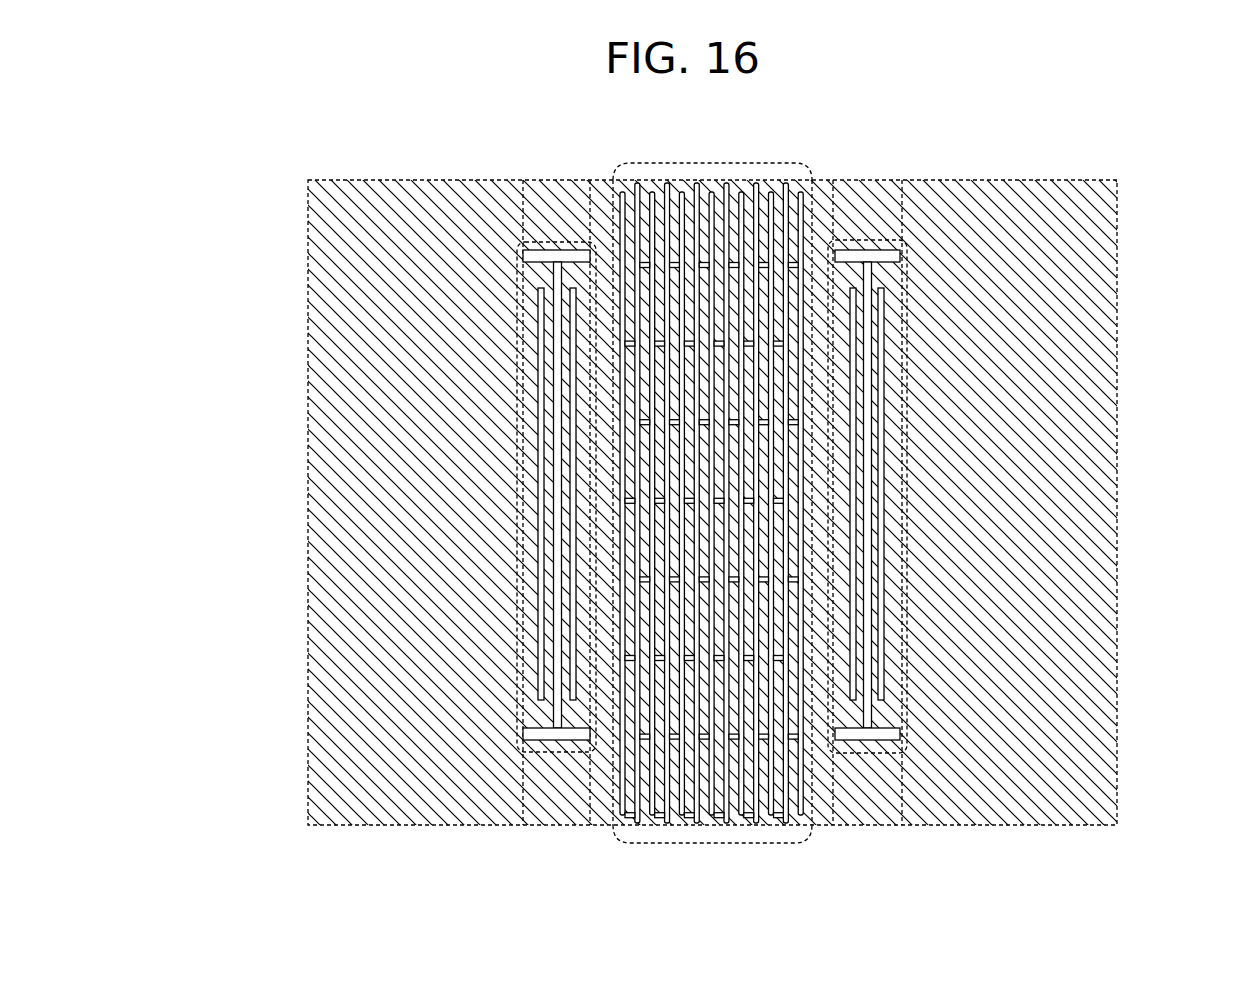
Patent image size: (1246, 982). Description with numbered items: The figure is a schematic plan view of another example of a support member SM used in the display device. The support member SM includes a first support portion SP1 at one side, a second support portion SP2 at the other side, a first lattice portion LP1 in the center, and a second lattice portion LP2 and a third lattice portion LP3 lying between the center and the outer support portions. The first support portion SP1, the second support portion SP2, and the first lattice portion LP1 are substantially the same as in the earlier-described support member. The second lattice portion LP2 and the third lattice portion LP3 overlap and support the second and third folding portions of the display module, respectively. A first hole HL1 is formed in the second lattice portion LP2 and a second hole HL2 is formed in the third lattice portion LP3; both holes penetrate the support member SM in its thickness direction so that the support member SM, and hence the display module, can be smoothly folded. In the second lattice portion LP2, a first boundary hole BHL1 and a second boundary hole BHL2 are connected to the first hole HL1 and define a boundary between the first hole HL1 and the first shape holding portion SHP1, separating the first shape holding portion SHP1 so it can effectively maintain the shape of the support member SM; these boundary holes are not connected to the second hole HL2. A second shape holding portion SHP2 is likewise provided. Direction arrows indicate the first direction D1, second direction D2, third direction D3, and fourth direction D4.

The support member SM is at (1166, 182).
The first support portion SP1 is at (397, 212).
The second support portion SP2 is at (1013, 196).
The first lattice portion LP1 is at (712, 161).
The second lattice portion LP2 is at (553, 240).
The third lattice portion LP3 is at (855, 240).
The first shape holding portion SHP1 is at (393, 504).
The second shape holding portion SHP2 is at (880, 220).
The first boundary hole BHL1 is at (520, 258).
The second boundary hole BHL2 is at (519, 741).
The first hole HL1 is at (549, 564).
The second hole HL2 is at (535, 420).
The first direction D1 is at (142, 813).
The second direction D2 is at (142, 813).
The third direction D3 is at (142, 813).
The fourth direction D4 is at (142, 813).